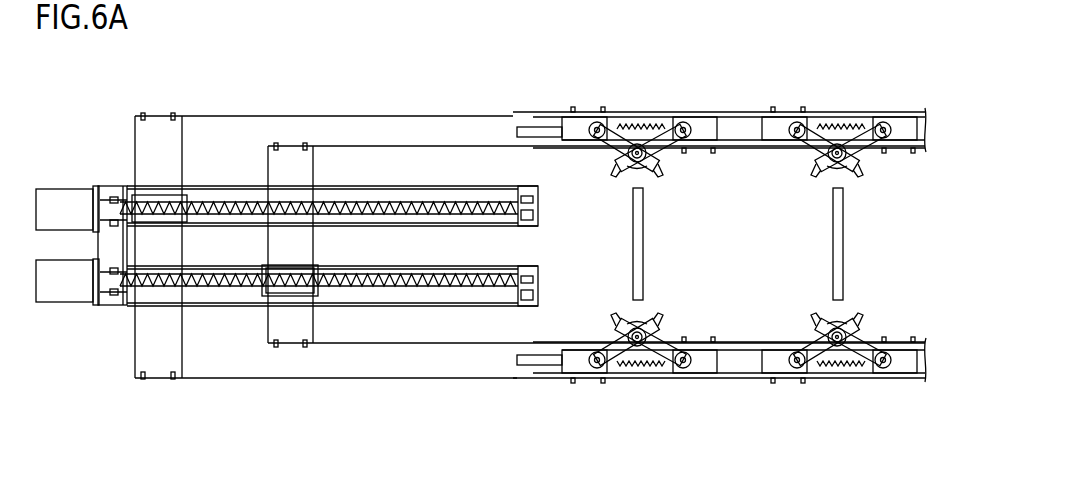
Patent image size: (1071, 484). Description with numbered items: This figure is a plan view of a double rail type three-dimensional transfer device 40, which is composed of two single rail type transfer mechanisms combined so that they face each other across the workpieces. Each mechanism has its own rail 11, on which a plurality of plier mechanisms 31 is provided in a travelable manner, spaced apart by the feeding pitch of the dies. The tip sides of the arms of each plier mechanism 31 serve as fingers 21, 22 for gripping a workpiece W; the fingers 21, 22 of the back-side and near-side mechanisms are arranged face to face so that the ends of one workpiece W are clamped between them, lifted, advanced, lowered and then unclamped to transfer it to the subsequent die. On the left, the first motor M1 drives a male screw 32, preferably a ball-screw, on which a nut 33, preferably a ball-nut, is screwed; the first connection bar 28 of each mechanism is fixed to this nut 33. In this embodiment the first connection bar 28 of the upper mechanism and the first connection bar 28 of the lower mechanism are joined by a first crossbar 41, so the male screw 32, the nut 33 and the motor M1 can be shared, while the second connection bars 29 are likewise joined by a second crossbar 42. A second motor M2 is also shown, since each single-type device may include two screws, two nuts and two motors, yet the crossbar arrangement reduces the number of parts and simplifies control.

The rail 11 is at (527, 364).
The finger 21 is at (617, 169).
The finger 22 is at (659, 168).
The first connection bar 28 is at (453, 113).
The second connection bar 29 is at (390, 147).
The plier mechanism 31 is at (663, 99).
The male screw 32 is at (220, 285).
The nut 33 is at (290, 265).
The transfer device 40 is at (857, 100).
The first crossbar 41 is at (148, 337).
The second crossbar 42 is at (277, 322).
The first motor M1 is at (64, 207).
The second motor M2 is at (79, 288).
The workpiece W is at (646, 248).